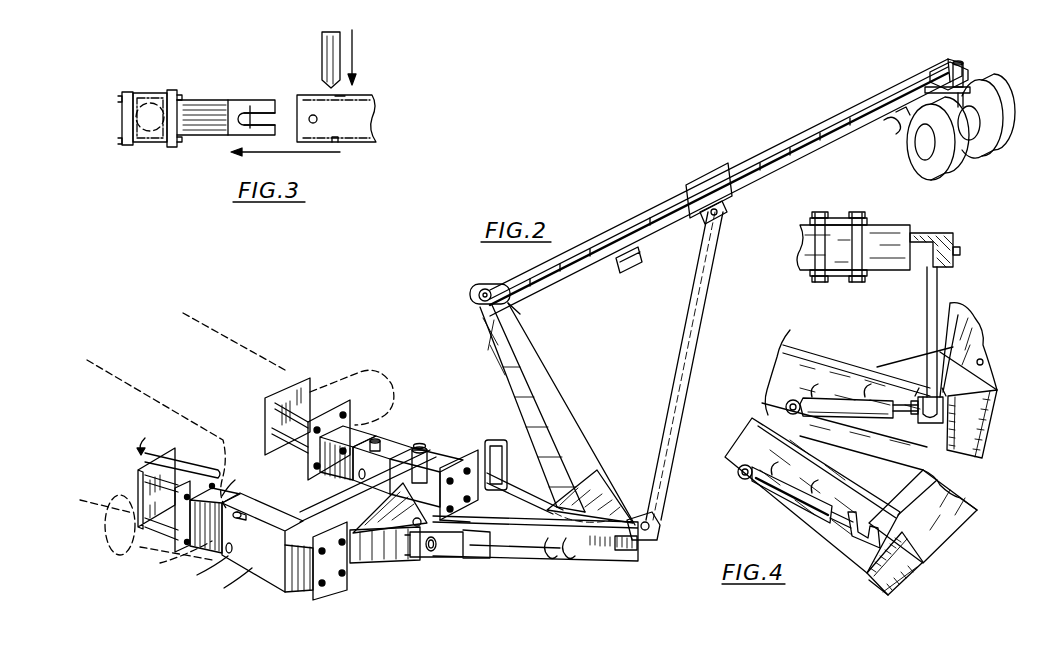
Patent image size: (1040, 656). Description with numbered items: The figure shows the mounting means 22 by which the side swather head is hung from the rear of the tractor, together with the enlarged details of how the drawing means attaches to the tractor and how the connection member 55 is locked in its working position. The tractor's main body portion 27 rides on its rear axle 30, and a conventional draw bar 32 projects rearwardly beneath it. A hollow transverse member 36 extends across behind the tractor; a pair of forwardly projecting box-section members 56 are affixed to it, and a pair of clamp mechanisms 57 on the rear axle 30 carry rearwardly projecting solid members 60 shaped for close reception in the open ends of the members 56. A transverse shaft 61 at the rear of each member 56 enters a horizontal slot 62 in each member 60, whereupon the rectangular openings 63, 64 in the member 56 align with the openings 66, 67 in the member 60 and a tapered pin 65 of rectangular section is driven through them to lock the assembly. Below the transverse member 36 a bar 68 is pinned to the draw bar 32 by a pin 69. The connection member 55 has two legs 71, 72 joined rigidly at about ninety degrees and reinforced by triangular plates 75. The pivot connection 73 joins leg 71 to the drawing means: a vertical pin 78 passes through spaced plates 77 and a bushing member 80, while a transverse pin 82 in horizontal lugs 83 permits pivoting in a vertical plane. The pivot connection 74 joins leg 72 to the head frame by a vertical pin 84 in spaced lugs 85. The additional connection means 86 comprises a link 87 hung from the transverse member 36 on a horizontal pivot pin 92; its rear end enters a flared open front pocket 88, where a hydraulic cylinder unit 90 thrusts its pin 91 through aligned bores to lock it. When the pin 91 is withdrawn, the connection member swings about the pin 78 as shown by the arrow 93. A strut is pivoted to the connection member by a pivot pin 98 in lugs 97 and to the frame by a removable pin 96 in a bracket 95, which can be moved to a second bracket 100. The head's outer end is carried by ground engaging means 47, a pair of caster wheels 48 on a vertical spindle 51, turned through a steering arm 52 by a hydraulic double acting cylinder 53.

In FIG. 2, the mounting means 22 is at (600, 216).
In FIG. 2, the main body portion 27 is at (230, 345).
In FIG. 2, the rear axle 30 is at (366, 370).
In FIG. 2, the draw bar 32 is at (300, 513).
In FIG. 2, the transverse member 36 is at (482, 438).
In FIG. 4, the transverse member 36 is at (892, 263).
In FIG. 2, the ground engaging means 47 is at (897, 167).
In FIG. 2, the caster wheels 48 is at (969, 172).
In FIG. 2, the vertical spindle 51 is at (962, 68).
In FIG. 2, the steering arm 52 is at (933, 75).
In FIG. 2, the hydraulic double acting cylinder 53 is at (891, 128).
In FIG. 2, the connection member 55 is at (617, 498).
In FIG. 4, the connection member 55 is at (868, 586).
In FIG. 3, the forwardly projecting members 56 is at (372, 114).
In FIG. 2, the forwardly projecting members 56 is at (402, 441).
In FIG. 3, the clamp mechanisms 57 is at (175, 92).
In FIG. 2, the clamp mechanisms 57 is at (274, 388).
In FIG. 3, the rearwardly projecting solid members 60 is at (205, 102).
In FIG. 2, the rearwardly projecting solid members 60 is at (363, 434).
In FIG. 3, the transverse shaft 61 is at (318, 120).
In FIG. 2, the transverse shaft 61 is at (366, 471).
In FIG. 3, the horizontal transverse slot 62 is at (257, 119).
In FIG. 3, the rectangular opening 63 is at (340, 98).
In FIG. 3, the rectangular opening 64 is at (336, 143).
In FIG. 3, the pin 65 is at (342, 30).
In FIG. 2, the pin 65 is at (421, 447).
In FIG. 3, the opening 66 is at (253, 107).
In FIG. 3, the opening 67 is at (232, 145).
In FIG. 2, the bar 68 is at (363, 586).
In FIG. 2, the pin 69 is at (368, 565).
In FIG. 2, the leg 71 is at (620, 560).
In FIG. 4, the leg 71 is at (968, 342).
In FIG. 2, the leg 72 is at (529, 346).
In FIG. 4, the leg 72 is at (903, 436).
In FIG. 2, the pivot connection 73 is at (444, 562).
In FIG. 2, the pivot connection 74 is at (520, 312).
In FIG. 2, the triangular plates 75 is at (588, 489).
In FIG. 4, the triangular plates 75 is at (916, 365).
In FIG. 2, the plates 77 is at (355, 587).
In FIG. 2, the vertical pin 78 is at (477, 522).
In FIG. 2, the bushing member 80 is at (442, 570).
In FIG. 2, the transverse pin 82 is at (487, 558).
In FIG. 2, the horizontal lugs 83 is at (497, 550).
In FIG. 2, the vertical pin 84 is at (488, 288).
In FIG. 2, the lugs 85 is at (478, 297).
In FIG. 4, the additional connection means 86 is at (917, 320).
In FIG. 2, the link 87 is at (506, 475).
In FIG. 4, the link 87 is at (937, 289).
In FIG. 4, the open front pocket 88 is at (929, 457).
In FIG. 2, the hydraulic cylinder unit 90 is at (553, 562).
In FIG. 4, the hydraulic cylinder unit 90 is at (848, 419).
In FIG. 4, the pin 91 is at (983, 362).
In FIG. 4, the horizontal pivot pin 92 is at (956, 244).
In FIG. 4, the arrow 93 is at (718, 423).
In FIG. 2, the bracket 95 is at (724, 212).
In FIG. 2, the removable pin 96 is at (729, 192).
In FIG. 2, the lugs 97 is at (652, 539).
In FIG. 2, the pivot pin 98 is at (652, 516).
In FIG. 2, the second bracket 100 is at (630, 275).